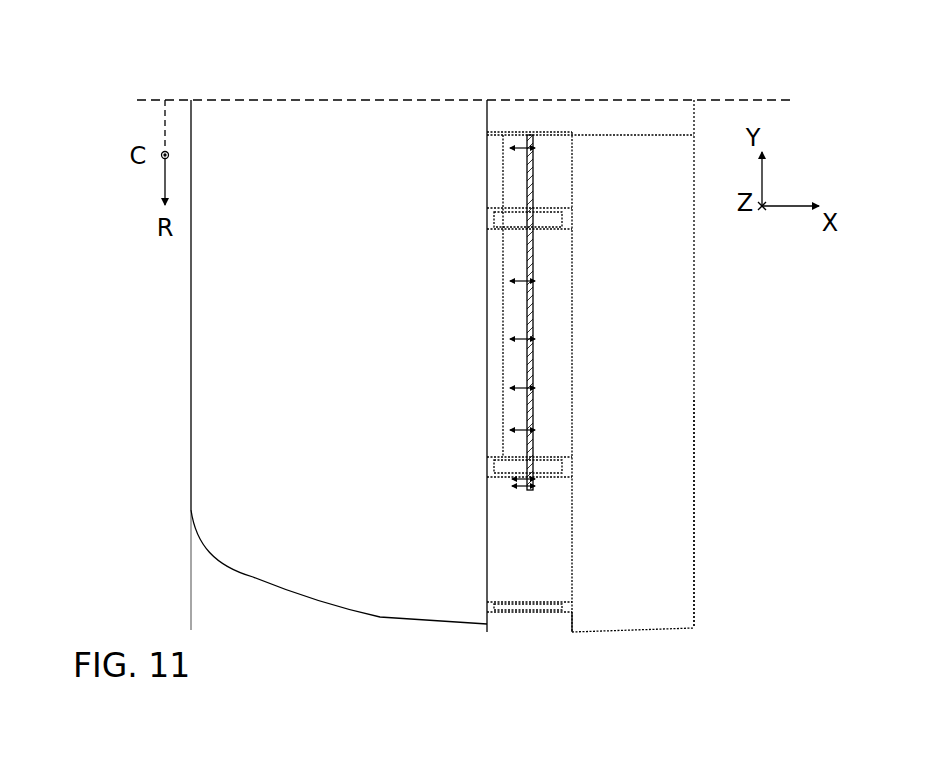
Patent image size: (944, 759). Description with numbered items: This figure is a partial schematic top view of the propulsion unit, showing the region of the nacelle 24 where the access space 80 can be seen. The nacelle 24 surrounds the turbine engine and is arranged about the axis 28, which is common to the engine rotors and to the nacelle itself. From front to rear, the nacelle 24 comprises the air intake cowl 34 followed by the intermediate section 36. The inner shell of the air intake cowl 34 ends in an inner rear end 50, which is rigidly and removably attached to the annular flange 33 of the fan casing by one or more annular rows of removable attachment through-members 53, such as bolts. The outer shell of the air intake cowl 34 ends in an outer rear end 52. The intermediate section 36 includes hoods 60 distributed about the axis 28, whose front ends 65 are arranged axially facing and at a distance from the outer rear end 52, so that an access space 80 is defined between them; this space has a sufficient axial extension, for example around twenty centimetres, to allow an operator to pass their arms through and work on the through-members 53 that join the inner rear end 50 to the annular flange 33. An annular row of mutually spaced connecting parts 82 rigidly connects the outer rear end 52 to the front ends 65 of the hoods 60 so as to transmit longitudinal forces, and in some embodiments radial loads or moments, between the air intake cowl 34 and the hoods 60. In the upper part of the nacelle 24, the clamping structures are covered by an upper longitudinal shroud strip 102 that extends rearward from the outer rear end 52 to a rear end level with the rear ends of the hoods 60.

The nacelle 24 is at (98, 202).
The axis 28 is at (458, 97).
The upper longitudinal shroud strip 102 is at (663, 118).
The access space 80 is at (555, 160).
The removable attachment through-members 53 is at (520, 281).
The annular flange 33 is at (533, 303).
The inner rear end 50 is at (505, 362).
The hoods 60 is at (648, 379).
The intermediate section 36 is at (757, 385).
The air intake cowl 34 is at (220, 435).
The connecting parts 82 is at (547, 467).
The outer rear end 52 is at (483, 618).
The front ends 65 is at (577, 617).